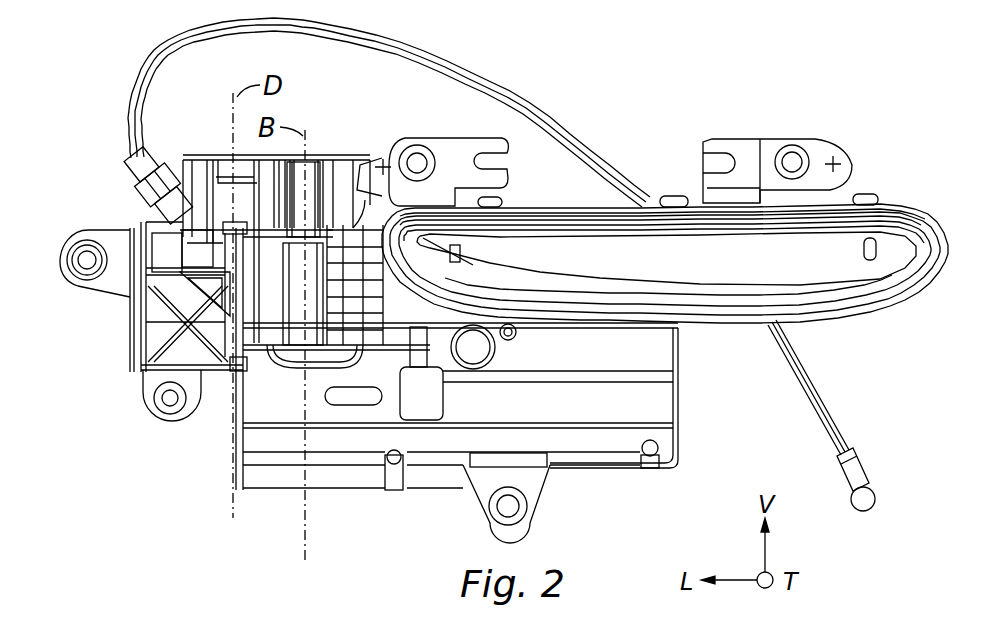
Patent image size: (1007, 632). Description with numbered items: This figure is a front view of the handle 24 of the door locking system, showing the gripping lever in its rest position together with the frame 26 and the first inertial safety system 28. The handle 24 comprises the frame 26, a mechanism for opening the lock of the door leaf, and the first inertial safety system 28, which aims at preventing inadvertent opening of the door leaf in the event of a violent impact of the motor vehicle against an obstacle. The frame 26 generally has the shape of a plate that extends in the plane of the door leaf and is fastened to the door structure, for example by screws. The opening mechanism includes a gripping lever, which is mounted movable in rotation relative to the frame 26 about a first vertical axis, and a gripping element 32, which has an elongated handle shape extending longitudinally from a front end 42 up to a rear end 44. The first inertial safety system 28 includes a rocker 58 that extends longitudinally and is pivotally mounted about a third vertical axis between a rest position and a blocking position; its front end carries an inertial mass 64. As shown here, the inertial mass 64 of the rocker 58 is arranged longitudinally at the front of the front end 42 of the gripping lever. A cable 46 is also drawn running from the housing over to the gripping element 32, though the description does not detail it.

The handle 24 is at (118, 204).
The frame 26 is at (292, 505).
The first inertial safety system 28 is at (172, 292).
The gripping element 32 is at (800, 278).
The front end 42 is at (447, 215).
The rear end 44 is at (886, 248).
The cable 46 is at (558, 127).
The rocker 58 is at (198, 305).
The inertial mass 64 is at (212, 282).